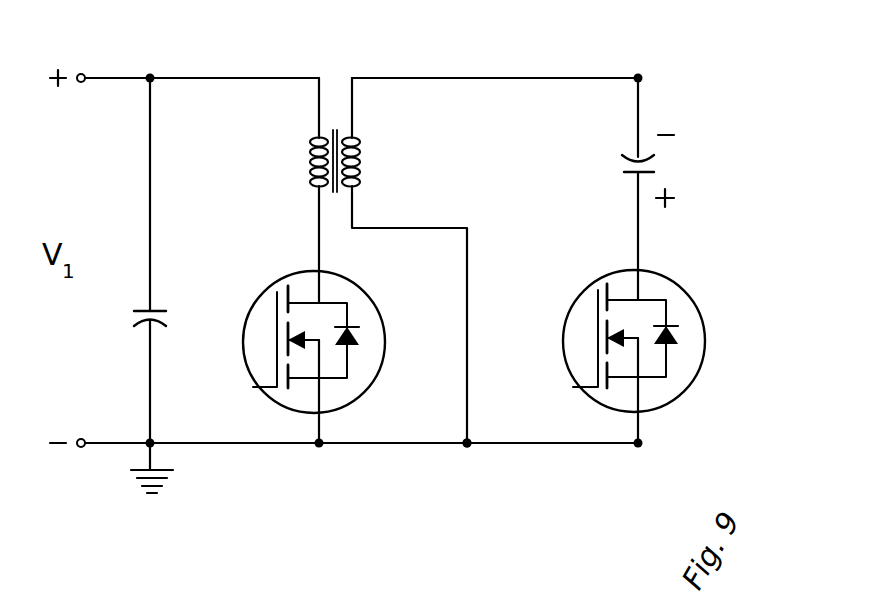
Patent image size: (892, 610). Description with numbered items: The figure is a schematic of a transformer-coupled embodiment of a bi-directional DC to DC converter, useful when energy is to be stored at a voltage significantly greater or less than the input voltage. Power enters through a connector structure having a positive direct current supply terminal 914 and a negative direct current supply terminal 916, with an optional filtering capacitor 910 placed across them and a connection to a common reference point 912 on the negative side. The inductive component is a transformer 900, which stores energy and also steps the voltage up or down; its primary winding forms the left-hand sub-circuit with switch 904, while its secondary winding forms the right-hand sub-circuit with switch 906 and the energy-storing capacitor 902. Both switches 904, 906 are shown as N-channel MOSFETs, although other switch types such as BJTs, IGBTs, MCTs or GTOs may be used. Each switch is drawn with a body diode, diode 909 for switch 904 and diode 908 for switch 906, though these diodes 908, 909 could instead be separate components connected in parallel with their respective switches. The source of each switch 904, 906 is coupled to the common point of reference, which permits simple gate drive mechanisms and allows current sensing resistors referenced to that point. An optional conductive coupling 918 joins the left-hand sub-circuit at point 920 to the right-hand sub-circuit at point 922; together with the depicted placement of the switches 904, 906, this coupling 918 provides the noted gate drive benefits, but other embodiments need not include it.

The transformer 900 is at (283, 121).
The capacitor 902 is at (642, 157).
The switch 904 is at (337, 411).
The switch 906 is at (664, 350).
The diode 908 is at (669, 324).
The diode 909 is at (351, 323).
The filtering capacitor 910 is at (146, 327).
The common reference point 912 is at (137, 483).
The positive direct current supply terminal 914 is at (82, 73).
The negative direct current supply terminal 916 is at (81, 448).
The conductive coupling 918 is at (412, 445).
The point 920 is at (318, 446).
The point 922 is at (466, 446).